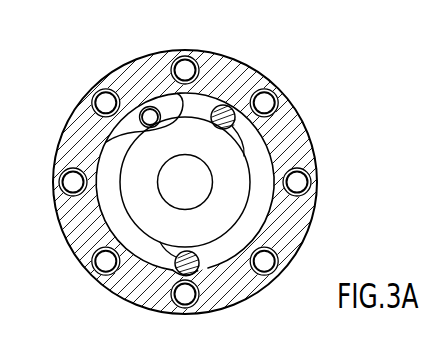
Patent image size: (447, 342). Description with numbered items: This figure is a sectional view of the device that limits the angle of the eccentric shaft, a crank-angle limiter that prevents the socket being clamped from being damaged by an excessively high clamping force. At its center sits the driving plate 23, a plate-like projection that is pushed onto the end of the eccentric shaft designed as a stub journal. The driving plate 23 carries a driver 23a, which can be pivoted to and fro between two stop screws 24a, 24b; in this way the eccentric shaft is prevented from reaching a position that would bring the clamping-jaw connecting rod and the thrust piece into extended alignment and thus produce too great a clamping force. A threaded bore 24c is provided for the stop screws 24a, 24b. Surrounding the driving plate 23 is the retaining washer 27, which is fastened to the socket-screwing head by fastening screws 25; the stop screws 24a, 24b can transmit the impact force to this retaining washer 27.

The driving plate 23 is at (243, 212).
The driver 23a is at (187, 101).
The stop screw 24a is at (236, 123).
The stop screw 24b is at (175, 263).
The threaded bore 24c is at (139, 121).
The fastening screw 25 is at (187, 70).
The retaining washer 27 is at (291, 116).